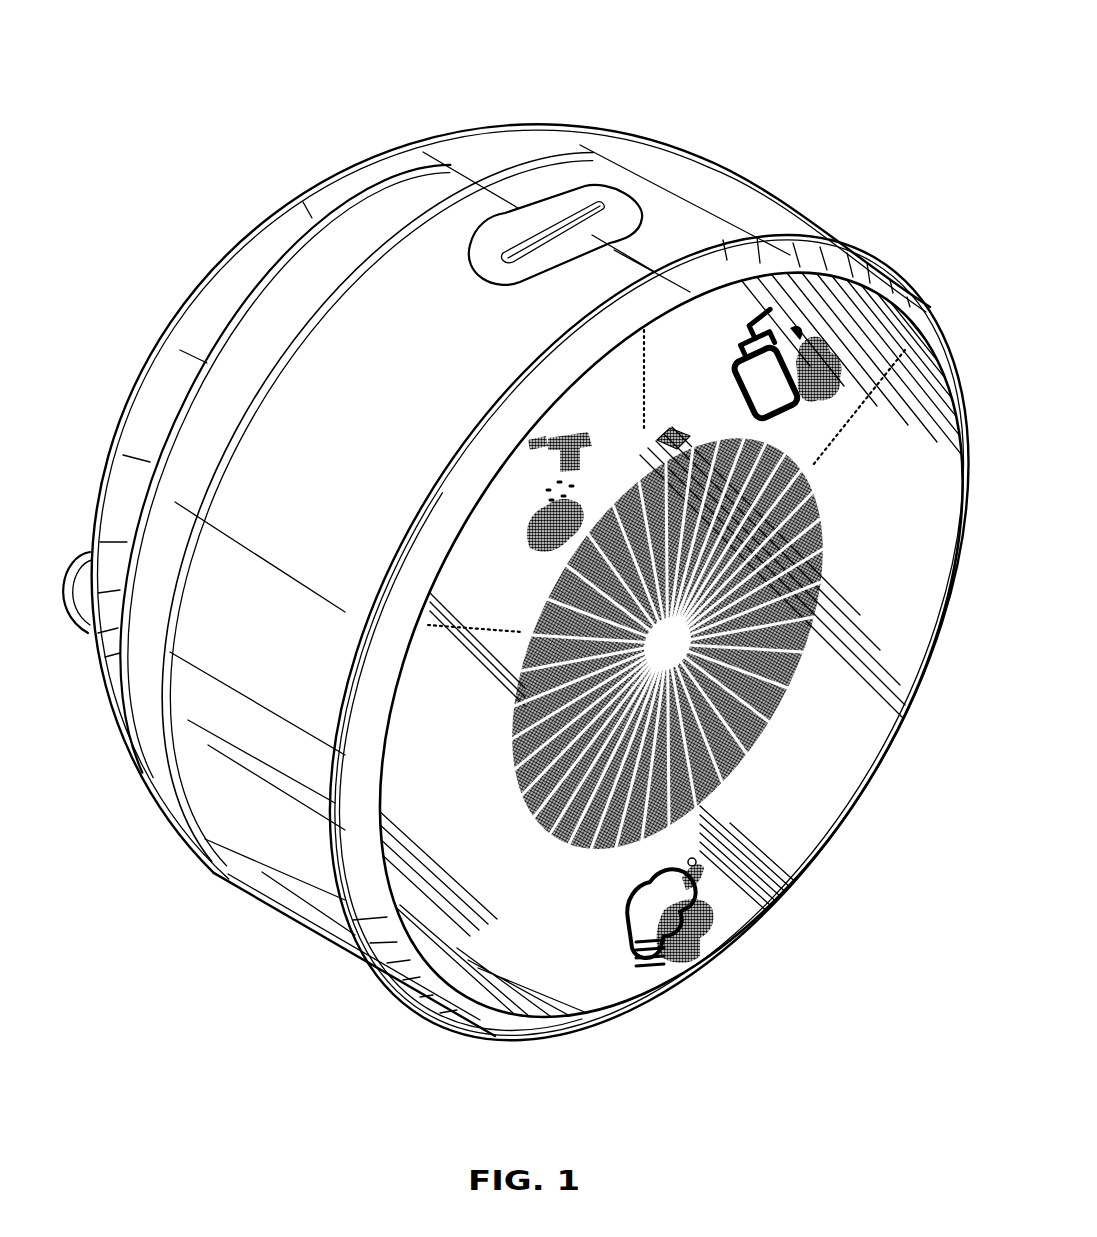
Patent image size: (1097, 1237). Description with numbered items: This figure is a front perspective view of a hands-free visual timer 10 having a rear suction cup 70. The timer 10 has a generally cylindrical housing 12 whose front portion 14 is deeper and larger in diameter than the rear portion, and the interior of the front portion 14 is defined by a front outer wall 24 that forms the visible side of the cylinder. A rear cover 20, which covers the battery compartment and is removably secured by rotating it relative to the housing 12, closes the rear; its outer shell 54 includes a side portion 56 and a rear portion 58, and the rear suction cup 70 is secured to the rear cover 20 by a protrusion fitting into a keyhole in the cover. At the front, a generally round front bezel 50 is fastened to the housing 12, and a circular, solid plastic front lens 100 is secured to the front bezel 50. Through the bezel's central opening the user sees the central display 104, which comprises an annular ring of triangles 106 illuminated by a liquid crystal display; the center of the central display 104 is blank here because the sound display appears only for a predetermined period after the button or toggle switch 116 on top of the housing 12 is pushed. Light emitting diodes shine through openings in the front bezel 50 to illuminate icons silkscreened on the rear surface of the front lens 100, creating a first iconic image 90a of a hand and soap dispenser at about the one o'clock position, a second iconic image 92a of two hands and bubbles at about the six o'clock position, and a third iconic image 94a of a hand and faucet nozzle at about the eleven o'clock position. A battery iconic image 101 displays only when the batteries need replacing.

The hands-free visual timer 10 is at (833, 86).
The housing 12 is at (737, 180).
The front portion 14 is at (782, 223).
The rear cover 20 is at (486, 131).
The front outer wall 24 is at (333, 502).
The front bezel 50 is at (924, 308).
The outer shell 54 is at (372, 183).
The side portion 56 is at (590, 138).
The rear portion 58 is at (272, 266).
The rear suction cup 70 is at (176, 326).
The first iconic image 90a is at (746, 350).
The second iconic image 92a is at (620, 918).
The third iconic image 94a is at (522, 522).
The front lens 100 is at (797, 842).
The battery iconic image 101 is at (673, 428).
The central display 104 is at (674, 643).
The triangles 106 is at (747, 750).
The button or toggle switch 116 is at (484, 272).